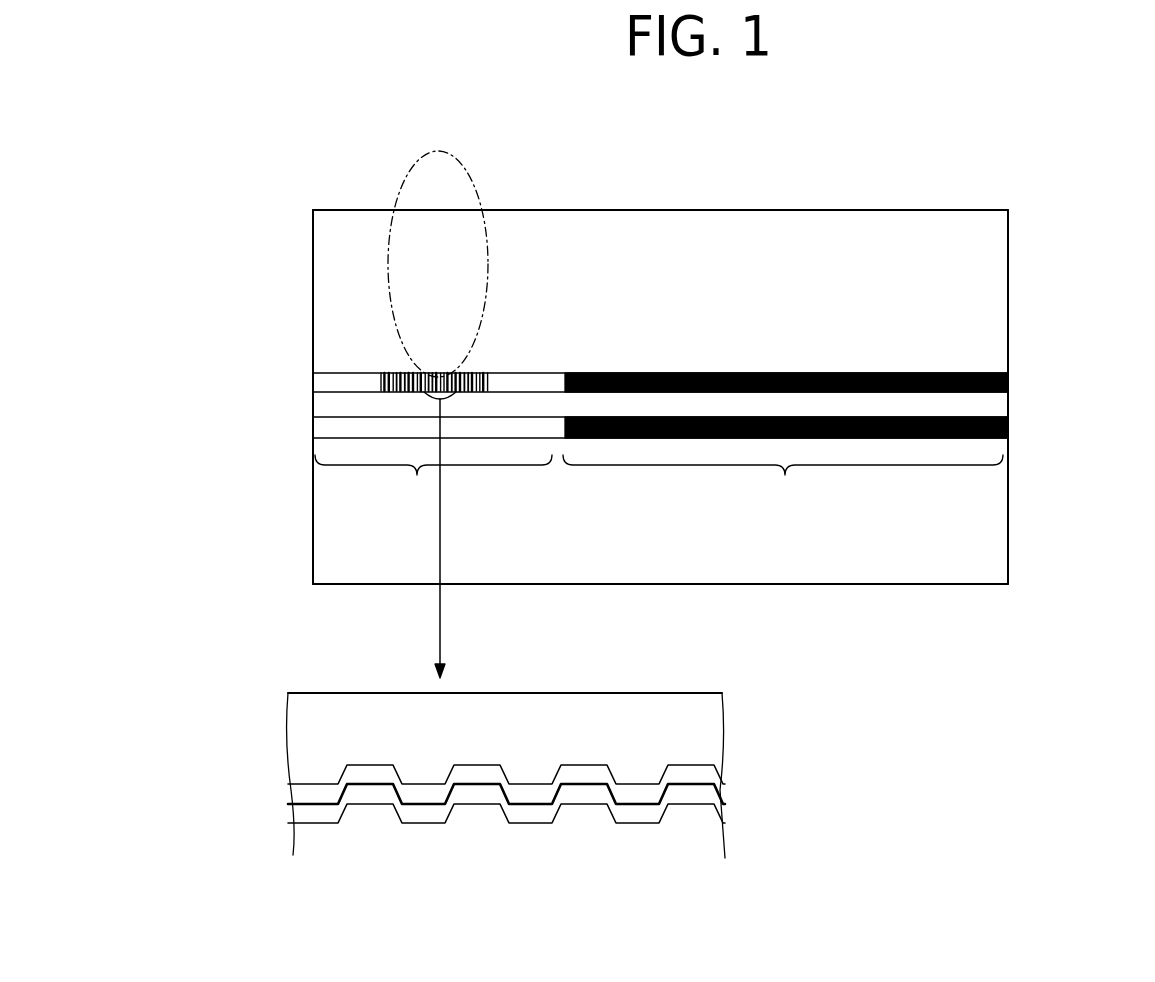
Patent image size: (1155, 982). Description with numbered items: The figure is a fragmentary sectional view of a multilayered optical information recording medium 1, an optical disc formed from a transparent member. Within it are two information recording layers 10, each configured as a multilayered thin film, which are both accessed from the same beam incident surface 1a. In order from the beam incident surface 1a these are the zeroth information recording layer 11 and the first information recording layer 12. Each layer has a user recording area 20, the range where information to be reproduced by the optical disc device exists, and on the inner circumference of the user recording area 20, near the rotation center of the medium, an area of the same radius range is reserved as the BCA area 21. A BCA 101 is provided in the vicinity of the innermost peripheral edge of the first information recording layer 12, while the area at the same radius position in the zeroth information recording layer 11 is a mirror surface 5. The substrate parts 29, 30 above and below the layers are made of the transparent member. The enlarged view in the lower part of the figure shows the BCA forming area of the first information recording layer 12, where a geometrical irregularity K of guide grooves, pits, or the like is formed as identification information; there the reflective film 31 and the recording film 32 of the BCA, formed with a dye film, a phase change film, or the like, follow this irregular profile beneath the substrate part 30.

The multilayered optical information recording medium 1 is at (862, 210).
The beam incident surface 1a is at (931, 586).
The mirror surface 5 is at (382, 425).
The information recording layers 10 is at (1083, 336).
The 0-th information recording layer 11 is at (990, 417).
The first information recording layer 12 is at (990, 373).
The user recording area 20 is at (786, 477).
The BCA area 21 is at (417, 478).
The substrate part 29 is at (585, 566).
The substrate part 30 is at (606, 228).
The reflective film 31 is at (663, 777).
The recording film 32 is at (663, 790).
The BCA 101 is at (450, 374).
The geometrical irregularity K is at (270, 753).